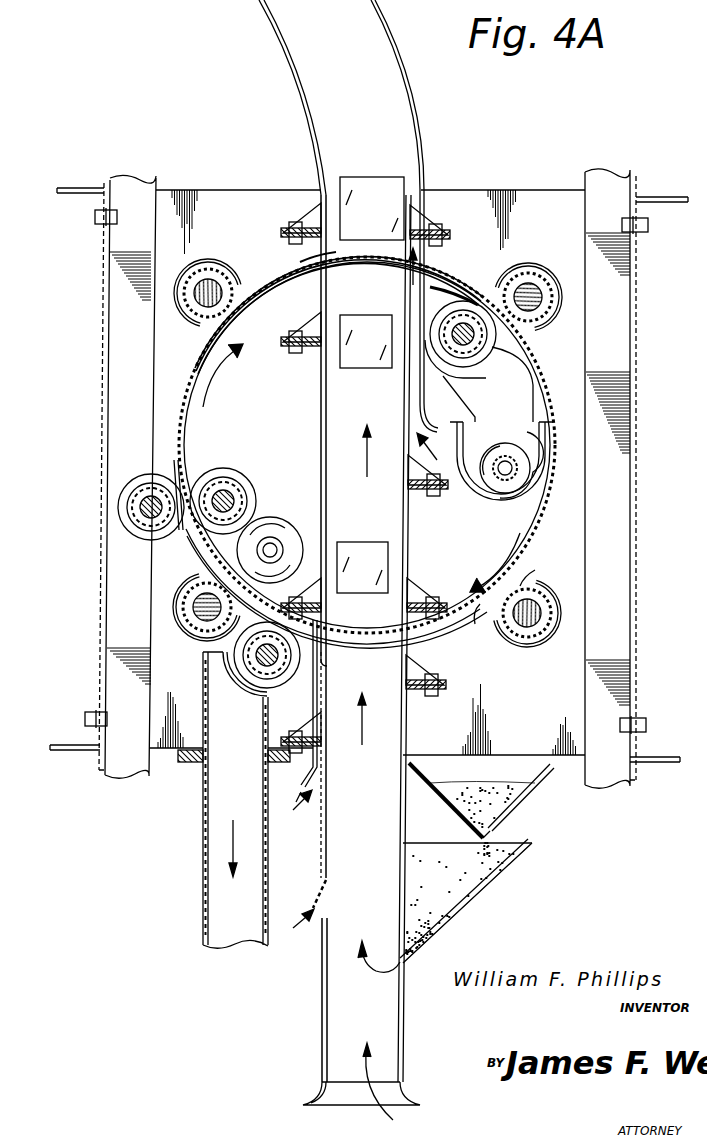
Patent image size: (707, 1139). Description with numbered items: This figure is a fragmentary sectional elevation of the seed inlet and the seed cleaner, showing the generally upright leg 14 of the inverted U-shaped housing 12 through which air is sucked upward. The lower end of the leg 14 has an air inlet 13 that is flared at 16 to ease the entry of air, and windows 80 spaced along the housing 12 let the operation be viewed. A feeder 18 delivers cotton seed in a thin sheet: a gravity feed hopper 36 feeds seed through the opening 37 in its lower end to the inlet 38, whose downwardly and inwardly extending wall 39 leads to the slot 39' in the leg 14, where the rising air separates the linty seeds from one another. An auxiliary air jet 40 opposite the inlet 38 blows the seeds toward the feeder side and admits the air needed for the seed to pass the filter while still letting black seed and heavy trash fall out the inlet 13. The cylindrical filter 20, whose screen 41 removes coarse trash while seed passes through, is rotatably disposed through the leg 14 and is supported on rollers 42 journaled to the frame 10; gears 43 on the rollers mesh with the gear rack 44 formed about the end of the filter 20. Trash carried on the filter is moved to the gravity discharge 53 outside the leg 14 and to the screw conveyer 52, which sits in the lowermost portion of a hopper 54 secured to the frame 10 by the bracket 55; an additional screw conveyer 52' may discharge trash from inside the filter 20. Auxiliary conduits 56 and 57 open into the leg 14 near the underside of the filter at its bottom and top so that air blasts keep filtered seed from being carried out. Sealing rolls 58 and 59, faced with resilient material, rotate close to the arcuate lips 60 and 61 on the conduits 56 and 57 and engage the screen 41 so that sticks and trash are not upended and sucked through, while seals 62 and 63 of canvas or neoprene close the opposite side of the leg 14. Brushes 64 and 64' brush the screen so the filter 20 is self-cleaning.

The frame 10 is at (136, 416).
The housing 12 is at (380, 3).
The air inlet 13 is at (345, 1080).
The upright leg 14 is at (321, 1030).
The flare 16 is at (318, 1095).
The feeder 18 is at (484, 897).
The filter 20 is at (469, 546).
The gravity feed hopper 36 is at (525, 790).
The opening 37 is at (490, 828).
The inlet 38 is at (515, 860).
The downwardly and inwardly extending wall 39 is at (467, 903).
The slot 39' is at (399, 975).
The auxiliary air jet 40 is at (306, 921).
The screen 41 is at (190, 393).
The rollers 42 is at (218, 268).
The gears 43 is at (532, 583).
The gear rack 44 is at (478, 618).
The screw conveyer 52 is at (505, 448).
The additional screw conveyer 52' is at (270, 541).
The gravity discharge 53 is at (245, 796).
The hopper 54 is at (515, 404).
The bracket 55 is at (538, 494).
The auxiliary conduit 56 is at (322, 743).
The auxiliary conduit 57 is at (450, 280).
The sealing roll 58 is at (281, 684).
The sealing roll 59 is at (492, 345).
The arcuately extending lip 60 is at (330, 658).
The arcuately extending lip 61 is at (445, 290).
The seal 62 is at (412, 638).
The seal 63 is at (304, 258).
The brush 64 is at (152, 518).
The brush 64' is at (238, 496).
The windows 80 is at (378, 222).